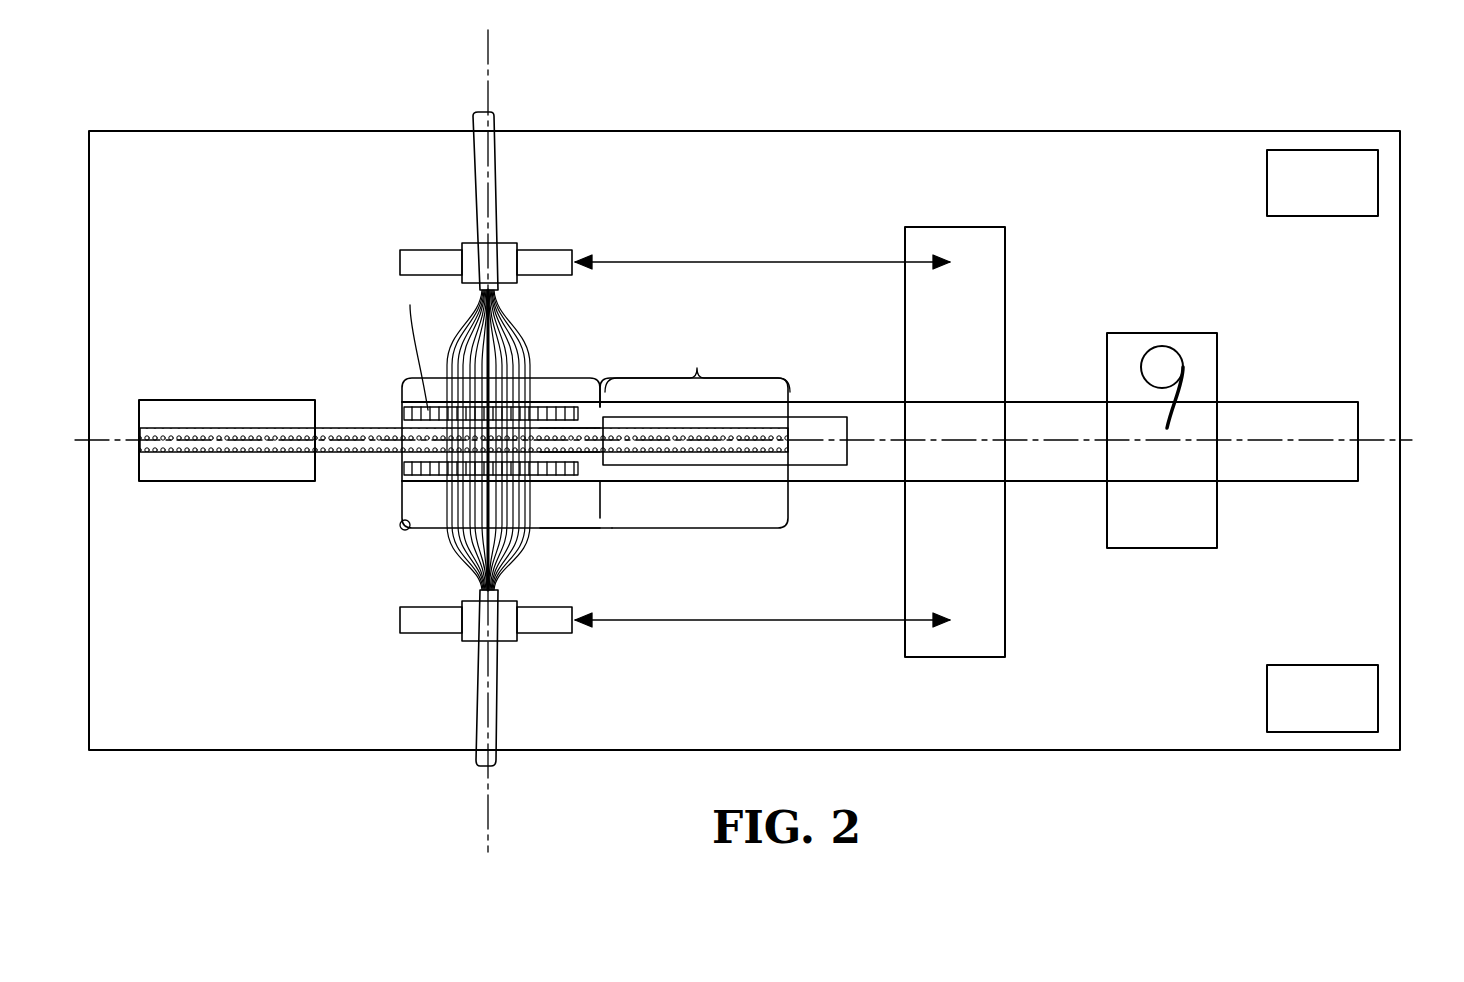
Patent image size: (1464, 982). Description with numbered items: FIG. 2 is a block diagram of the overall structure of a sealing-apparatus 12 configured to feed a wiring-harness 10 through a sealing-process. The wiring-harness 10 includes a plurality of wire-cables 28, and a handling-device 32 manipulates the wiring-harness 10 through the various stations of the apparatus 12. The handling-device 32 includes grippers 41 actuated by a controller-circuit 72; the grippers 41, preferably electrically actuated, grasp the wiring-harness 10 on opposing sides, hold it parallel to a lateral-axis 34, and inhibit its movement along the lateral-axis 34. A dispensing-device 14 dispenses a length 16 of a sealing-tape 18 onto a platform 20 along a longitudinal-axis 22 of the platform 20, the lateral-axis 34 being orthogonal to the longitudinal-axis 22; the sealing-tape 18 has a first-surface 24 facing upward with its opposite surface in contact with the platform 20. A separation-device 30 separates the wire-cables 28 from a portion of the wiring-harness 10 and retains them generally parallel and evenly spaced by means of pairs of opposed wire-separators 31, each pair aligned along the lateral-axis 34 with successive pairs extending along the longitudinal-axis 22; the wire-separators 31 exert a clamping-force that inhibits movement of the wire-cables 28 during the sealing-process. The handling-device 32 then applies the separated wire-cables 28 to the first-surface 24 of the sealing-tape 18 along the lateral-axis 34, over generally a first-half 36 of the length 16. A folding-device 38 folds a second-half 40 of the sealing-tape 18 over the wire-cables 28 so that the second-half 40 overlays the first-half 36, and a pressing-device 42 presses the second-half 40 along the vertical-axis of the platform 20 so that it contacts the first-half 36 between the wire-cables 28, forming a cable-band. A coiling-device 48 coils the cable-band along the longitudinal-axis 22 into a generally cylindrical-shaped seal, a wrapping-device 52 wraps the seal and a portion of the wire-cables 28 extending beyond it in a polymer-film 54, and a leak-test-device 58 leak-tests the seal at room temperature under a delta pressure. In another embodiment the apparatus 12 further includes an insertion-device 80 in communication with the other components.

The wiring-harness 10 is at (477, 162).
The sealing-apparatus 12 is at (215, 112).
The dispensing-device 14 is at (205, 482).
The length 16 is at (580, 528).
The sealing-tape 18 is at (206, 430).
The platform 20 is at (1040, 483).
The longitudinal-axis 22 is at (1412, 448).
The first-surface 24 is at (568, 450).
The wire-cables 28 is at (538, 332).
The separation-device 30 is at (404, 412).
The wire-separators 31 is at (407, 378).
The handling-device 32 is at (538, 248).
The lateral-axis 34 is at (488, 835).
The first-half 36 is at (461, 435).
The folding-device 38 is at (803, 468).
The second-half 40 is at (697, 366).
The grippers 41 is at (462, 262).
The pressing-device 42 is at (838, 466).
The coiling-device 48 is at (980, 658).
The wrapping-device 52 is at (1148, 333).
The polymer-film 54 is at (1188, 400).
The leak-test-device 58 is at (1335, 732).
The controller-circuit 72 is at (1340, 150).
The insertion-device 80 is at (1163, 549).